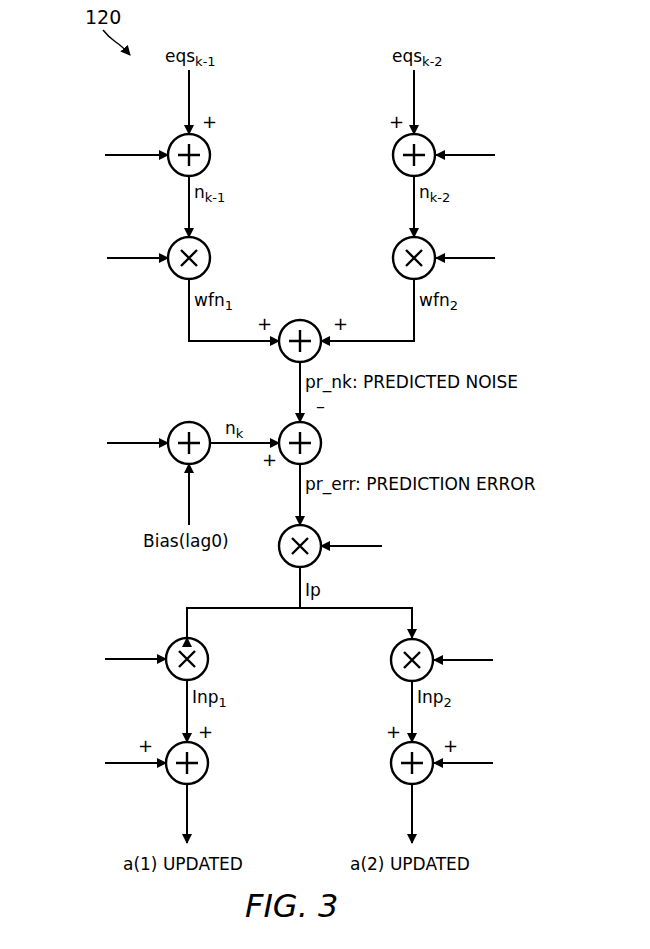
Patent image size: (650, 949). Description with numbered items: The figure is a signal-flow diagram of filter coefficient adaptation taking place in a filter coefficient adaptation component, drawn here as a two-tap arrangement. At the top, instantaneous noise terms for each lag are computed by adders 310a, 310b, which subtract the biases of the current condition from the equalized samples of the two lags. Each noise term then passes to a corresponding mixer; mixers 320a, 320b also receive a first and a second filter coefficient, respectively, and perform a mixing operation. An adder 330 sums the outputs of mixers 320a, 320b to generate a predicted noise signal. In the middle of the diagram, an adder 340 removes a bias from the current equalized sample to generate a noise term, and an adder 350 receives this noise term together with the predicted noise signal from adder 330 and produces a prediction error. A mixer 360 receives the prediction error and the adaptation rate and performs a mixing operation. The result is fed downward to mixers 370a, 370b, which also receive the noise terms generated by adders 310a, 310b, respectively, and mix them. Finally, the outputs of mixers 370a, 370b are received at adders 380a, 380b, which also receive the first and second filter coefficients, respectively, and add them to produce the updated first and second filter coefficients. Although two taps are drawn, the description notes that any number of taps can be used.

The adder 310a is at (177, 140).
The adder 310b is at (455, 120).
The mixer 320a is at (177, 244).
The mixer 320b is at (400, 244).
The adder 330 is at (292, 322).
The adder 340 is at (176, 428).
The adder 350 is at (287, 428).
The mixer 360 is at (287, 531).
The mixer 370a is at (174, 677).
The mixer 370b is at (399, 678).
The adder 380a is at (174, 782).
The adder 380b is at (399, 782).